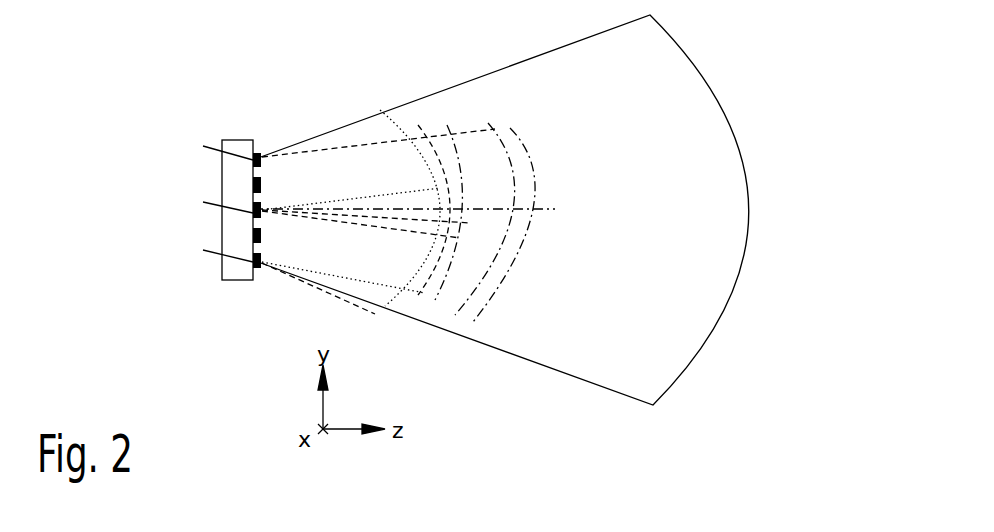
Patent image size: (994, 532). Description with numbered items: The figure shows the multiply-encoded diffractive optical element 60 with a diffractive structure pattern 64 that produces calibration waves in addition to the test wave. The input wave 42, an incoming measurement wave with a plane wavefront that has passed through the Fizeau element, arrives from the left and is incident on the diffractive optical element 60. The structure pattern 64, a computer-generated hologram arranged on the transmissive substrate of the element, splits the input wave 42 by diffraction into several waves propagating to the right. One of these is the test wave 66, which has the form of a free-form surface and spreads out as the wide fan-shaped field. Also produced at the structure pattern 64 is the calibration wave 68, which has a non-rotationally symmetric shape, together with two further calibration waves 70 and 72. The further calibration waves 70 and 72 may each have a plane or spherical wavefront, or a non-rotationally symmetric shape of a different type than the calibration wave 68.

The input wave 42 is at (210, 258).
The diffractive optical element 60 is at (237, 140).
The diffractive structure pattern 64 is at (263, 183).
The test wave 66 is at (748, 210).
The calibration wave 68 is at (500, 292).
The further calibration wave 70 is at (347, 316).
The further calibration wave 72 is at (379, 112).